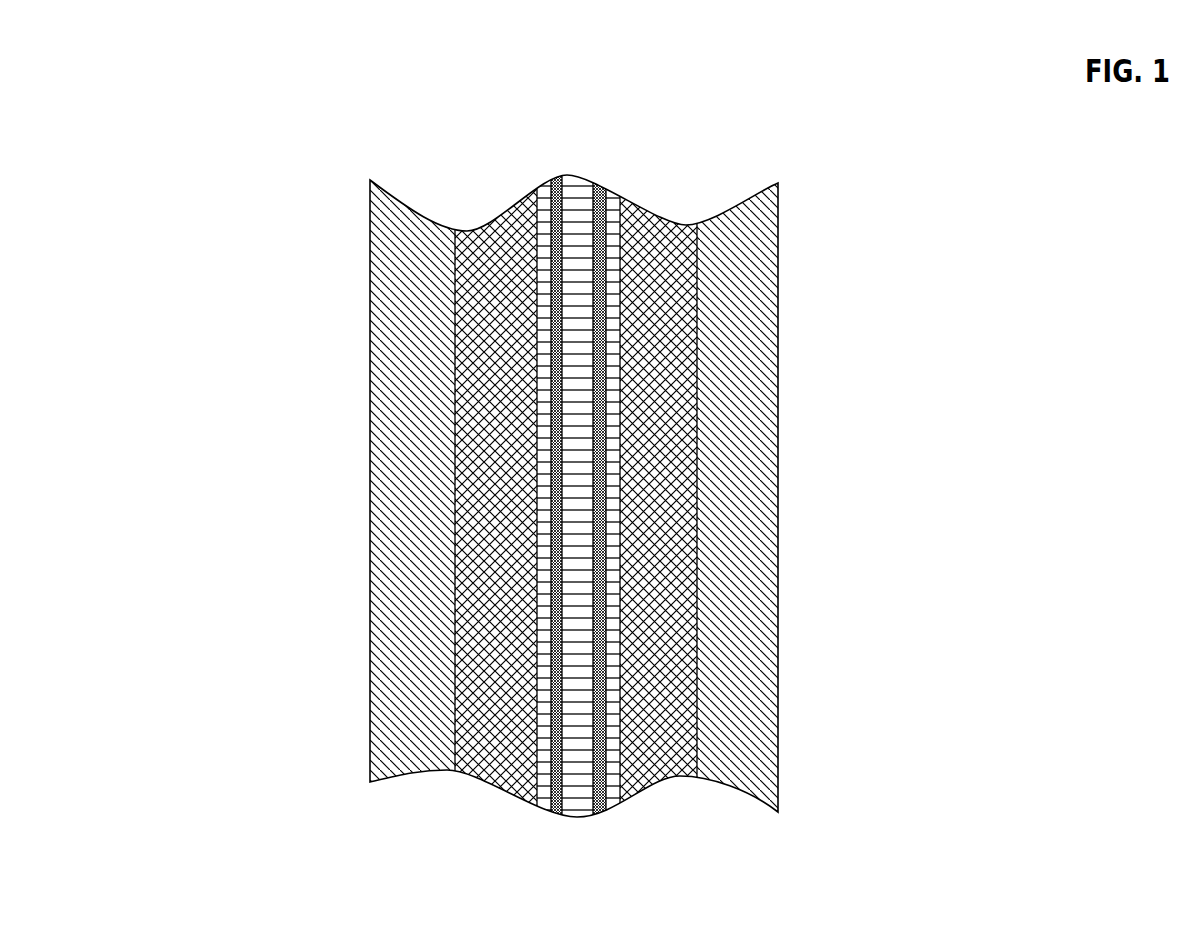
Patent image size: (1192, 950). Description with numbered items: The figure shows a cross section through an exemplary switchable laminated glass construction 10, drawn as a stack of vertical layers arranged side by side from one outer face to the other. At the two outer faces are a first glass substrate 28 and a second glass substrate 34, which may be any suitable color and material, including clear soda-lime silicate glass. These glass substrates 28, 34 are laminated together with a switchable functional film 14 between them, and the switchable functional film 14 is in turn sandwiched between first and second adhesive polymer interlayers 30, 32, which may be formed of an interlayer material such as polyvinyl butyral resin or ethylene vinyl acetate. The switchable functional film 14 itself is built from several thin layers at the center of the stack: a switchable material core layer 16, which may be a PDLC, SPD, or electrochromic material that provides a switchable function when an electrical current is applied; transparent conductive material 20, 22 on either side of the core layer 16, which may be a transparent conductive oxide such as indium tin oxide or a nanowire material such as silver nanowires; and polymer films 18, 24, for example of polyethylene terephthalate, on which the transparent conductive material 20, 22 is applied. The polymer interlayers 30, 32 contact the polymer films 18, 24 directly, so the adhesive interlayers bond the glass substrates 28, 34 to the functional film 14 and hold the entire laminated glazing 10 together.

The switchable laminated glass construction 10 is at (516, 463).
The switchable functional film 14 is at (569, 463).
The switchable material core layer 16 is at (580, 782).
The polymer film 18 is at (546, 212).
The transparent conductive material 20 is at (556, 795).
The transparent conductive material 22 is at (602, 800).
The polymer film 24 is at (616, 210).
The first glass substrate 28 is at (407, 655).
The first adhesive polymer interlayer 30 is at (492, 278).
The second adhesive polymer interlayer 32 is at (660, 258).
The second glass substrate 34 is at (752, 508).